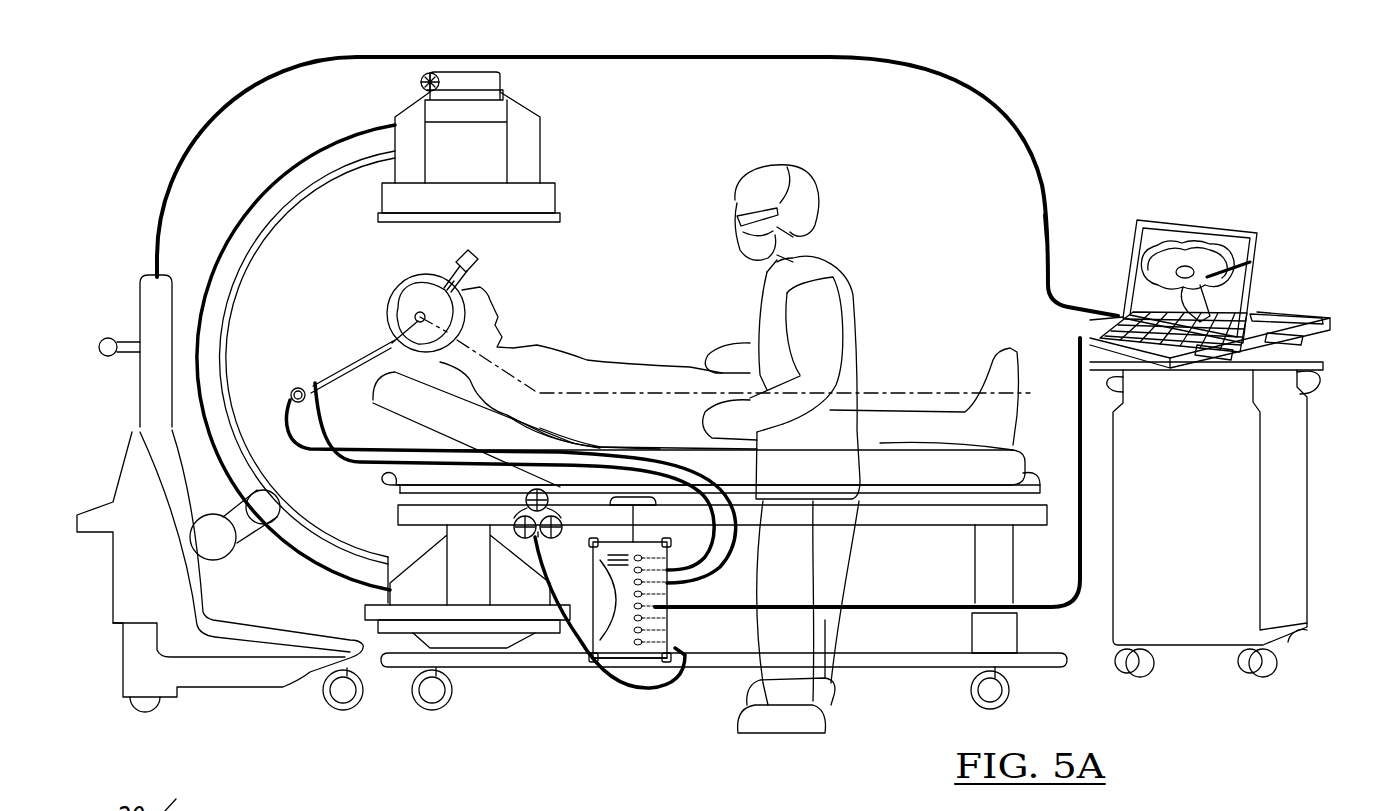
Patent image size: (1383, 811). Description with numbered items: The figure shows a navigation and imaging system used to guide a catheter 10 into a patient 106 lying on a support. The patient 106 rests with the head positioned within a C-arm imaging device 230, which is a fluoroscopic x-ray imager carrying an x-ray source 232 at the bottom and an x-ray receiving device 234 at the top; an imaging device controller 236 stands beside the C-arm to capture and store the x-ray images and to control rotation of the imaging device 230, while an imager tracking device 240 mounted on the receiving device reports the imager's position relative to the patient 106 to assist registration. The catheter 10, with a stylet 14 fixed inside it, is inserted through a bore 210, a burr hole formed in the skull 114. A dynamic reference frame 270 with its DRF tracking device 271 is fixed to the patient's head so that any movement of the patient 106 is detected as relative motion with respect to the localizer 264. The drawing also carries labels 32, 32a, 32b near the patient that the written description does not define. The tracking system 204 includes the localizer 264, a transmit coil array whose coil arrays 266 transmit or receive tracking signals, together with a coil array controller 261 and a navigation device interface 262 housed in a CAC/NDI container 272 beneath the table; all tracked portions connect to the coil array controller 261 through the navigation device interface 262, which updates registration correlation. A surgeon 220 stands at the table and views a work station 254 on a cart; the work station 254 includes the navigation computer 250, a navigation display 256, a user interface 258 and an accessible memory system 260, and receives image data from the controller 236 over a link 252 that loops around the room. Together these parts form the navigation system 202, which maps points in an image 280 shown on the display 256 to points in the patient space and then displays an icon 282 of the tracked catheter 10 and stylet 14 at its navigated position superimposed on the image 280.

The catheter 10 is at (330, 347).
The stylet 14 is at (297, 386).
The patient tracking device 32 is at (523, 447).
The patient tracking device 32a is at (570, 437).
The patient tracking device 32b is at (630, 448).
The patient 106 is at (575, 345).
The skull 114 is at (425, 280).
The navigation system 202 is at (1011, 137).
The tracking system 204 is at (660, 712).
The bore 210 is at (416, 314).
The surgeon 220 is at (857, 313).
The imaging device 230 is at (248, 213).
The x-ray source 232 is at (460, 565).
The x-ray receiving device 234 is at (530, 138).
The imaging device controller 236 is at (148, 303).
The imager tracking device 240 is at (421, 86).
The navigation computer 250 is at (1223, 352).
The link 252 is at (963, 93).
The work station 254 is at (1218, 158).
The navigation display 256 is at (1147, 220).
The user interface 258 is at (1203, 335).
The accessible memory system 260 is at (1287, 338).
The coil array controller 261 is at (605, 660).
The navigation device interface 262 is at (665, 635).
The localizer 264 is at (393, 513).
The coil arrays 266 is at (531, 537).
The dynamic reference frame 270 is at (478, 271).
The DRF tracking device 271 is at (480, 257).
The CAC/NDI container 272 is at (624, 640).
The image 280 is at (1173, 260).
The icon 282 is at (1250, 262).